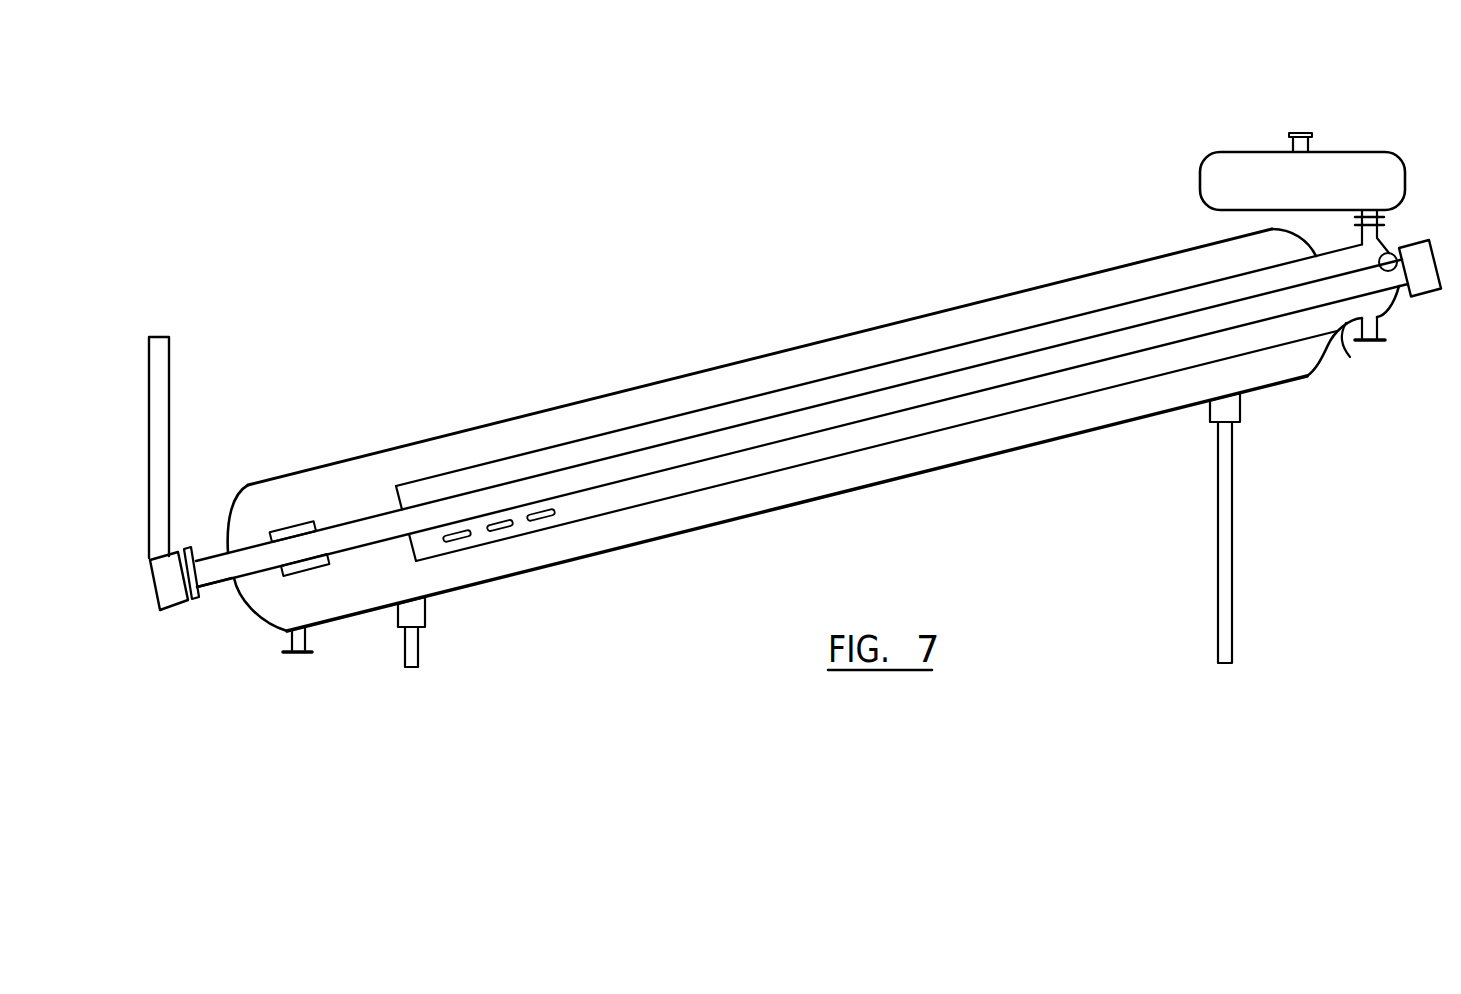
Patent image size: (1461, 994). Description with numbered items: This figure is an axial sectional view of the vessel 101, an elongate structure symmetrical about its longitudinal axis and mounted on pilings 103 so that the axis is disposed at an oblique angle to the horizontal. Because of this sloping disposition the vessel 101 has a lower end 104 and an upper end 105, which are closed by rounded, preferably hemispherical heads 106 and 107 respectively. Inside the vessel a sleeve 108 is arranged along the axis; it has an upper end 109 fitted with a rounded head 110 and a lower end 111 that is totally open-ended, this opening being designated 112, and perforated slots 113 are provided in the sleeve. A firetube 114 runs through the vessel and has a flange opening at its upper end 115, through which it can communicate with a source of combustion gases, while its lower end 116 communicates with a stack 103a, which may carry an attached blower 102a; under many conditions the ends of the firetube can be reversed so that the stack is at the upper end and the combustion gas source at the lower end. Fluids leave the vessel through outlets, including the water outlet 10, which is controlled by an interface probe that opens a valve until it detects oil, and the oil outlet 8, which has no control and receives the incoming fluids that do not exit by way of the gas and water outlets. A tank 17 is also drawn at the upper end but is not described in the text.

The oil outlet 8 is at (1380, 327).
The water outlet 10 is at (293, 657).
The tank 17 is at (1347, 152).
The vessel 101 is at (674, 350).
The blower 102a is at (173, 612).
The pilings 103 is at (418, 657).
The stack 103a is at (163, 405).
The lower end 104 is at (262, 595).
The upper end 105 is at (1297, 355).
The head 106 is at (233, 508).
The head 107 is at (1308, 224).
The sleeve 108 is at (968, 343).
The upper end 109 is at (1349, 357).
The rounded head 110 is at (1390, 306).
The lower end 111 is at (430, 557).
The open end 112 is at (398, 549).
The perforated slots 113 is at (498, 528).
The firetube 114 is at (363, 532).
The upper end 115 is at (1386, 253).
The lower end 116 is at (192, 578).